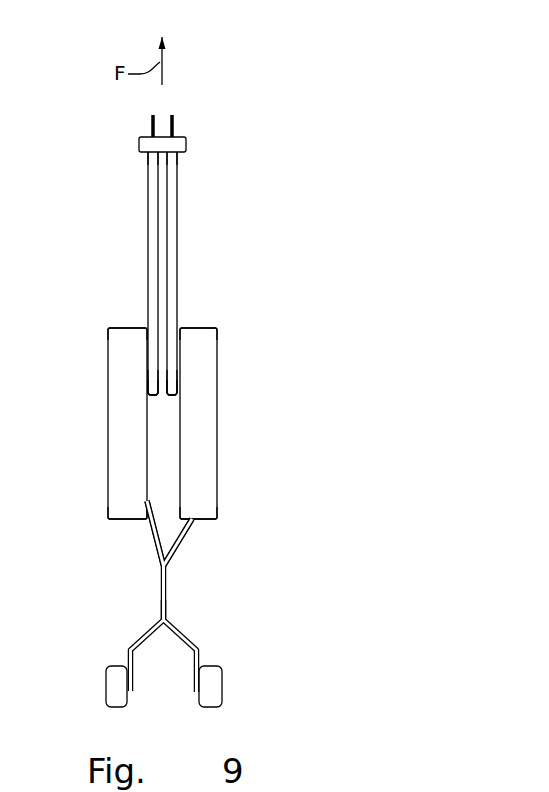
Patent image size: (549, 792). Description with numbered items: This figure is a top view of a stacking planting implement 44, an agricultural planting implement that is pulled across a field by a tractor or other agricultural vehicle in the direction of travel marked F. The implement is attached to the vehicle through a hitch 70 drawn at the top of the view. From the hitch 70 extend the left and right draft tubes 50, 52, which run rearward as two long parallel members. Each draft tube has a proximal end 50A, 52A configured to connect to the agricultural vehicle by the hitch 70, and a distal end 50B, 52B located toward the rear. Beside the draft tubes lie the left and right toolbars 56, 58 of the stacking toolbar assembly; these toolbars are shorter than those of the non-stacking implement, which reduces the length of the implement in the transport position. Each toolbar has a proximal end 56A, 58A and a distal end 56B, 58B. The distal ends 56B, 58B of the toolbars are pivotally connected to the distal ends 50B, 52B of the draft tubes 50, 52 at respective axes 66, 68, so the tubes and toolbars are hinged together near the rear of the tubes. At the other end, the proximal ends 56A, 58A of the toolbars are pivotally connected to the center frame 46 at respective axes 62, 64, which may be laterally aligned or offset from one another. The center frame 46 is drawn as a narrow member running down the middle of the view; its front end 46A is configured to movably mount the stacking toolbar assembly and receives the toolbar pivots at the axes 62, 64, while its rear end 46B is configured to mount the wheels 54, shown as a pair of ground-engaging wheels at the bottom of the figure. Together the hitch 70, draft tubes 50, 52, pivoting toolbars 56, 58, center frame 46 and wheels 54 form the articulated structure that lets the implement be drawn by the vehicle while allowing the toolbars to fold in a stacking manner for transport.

The stacking planting implement 44 is at (257, 135).
The hitch 70 is at (185, 133).
The left draft tube 50 is at (148, 218).
The proximal end of left draft tube 50A is at (145, 163).
The distal end of left draft tube 50B is at (140, 396).
The right draft tube 52 is at (177, 230).
The proximal end of right draft tube 52A is at (183, 164).
The distal end of right draft tube 52B is at (185, 396).
The left toolbar 56 is at (118, 468).
The proximal end of left toolbar 56A is at (104, 518).
The distal end of left toolbar 56B is at (103, 327).
The right toolbar 58 is at (208, 468).
The proximal end of right toolbar 58A is at (221, 518).
The distal end of right toolbar 58B is at (221, 327).
The axis 66 is at (148, 386).
The axis 68 is at (177, 386).
The axis 62 is at (142, 523).
The axis 64 is at (202, 529).
The center frame 46 is at (167, 602).
The front end of center frame 46A is at (178, 569).
The rear end of center frame 46B is at (137, 631).
The wheels 54 is at (107, 705).